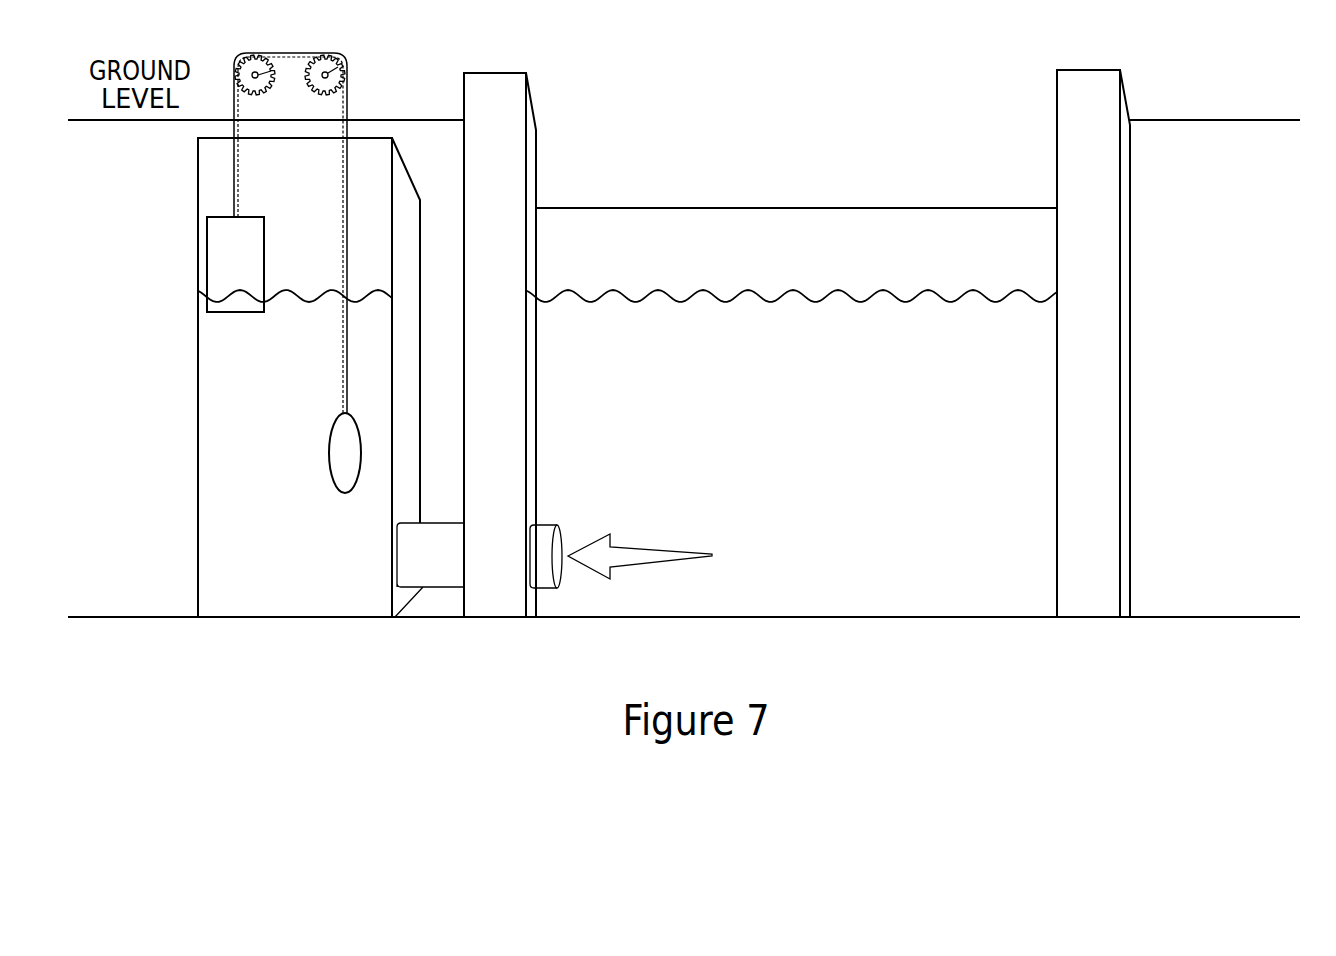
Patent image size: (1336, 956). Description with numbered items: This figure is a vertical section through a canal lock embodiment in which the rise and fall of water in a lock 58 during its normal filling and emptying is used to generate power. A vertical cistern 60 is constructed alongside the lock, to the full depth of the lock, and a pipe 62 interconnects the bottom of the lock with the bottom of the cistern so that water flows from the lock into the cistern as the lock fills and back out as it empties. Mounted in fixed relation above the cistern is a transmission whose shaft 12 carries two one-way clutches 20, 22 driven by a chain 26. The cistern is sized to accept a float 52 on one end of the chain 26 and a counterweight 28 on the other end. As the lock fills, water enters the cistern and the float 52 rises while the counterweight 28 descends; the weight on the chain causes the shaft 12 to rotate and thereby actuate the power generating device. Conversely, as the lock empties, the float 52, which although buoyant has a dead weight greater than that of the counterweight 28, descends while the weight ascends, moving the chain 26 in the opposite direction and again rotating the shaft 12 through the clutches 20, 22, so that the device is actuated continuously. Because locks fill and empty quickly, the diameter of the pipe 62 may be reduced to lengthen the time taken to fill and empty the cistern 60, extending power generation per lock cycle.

The shaft 12 is at (309, 66).
The one-way clutch 20 is at (237, 62).
The one-way clutch 22 is at (342, 62).
The chain 26 is at (344, 353).
The counterweight 28 is at (336, 486).
The float 52 is at (232, 313).
The lock 58 is at (878, 134).
The cistern 60 is at (408, 172).
The pipe 62 is at (569, 530).